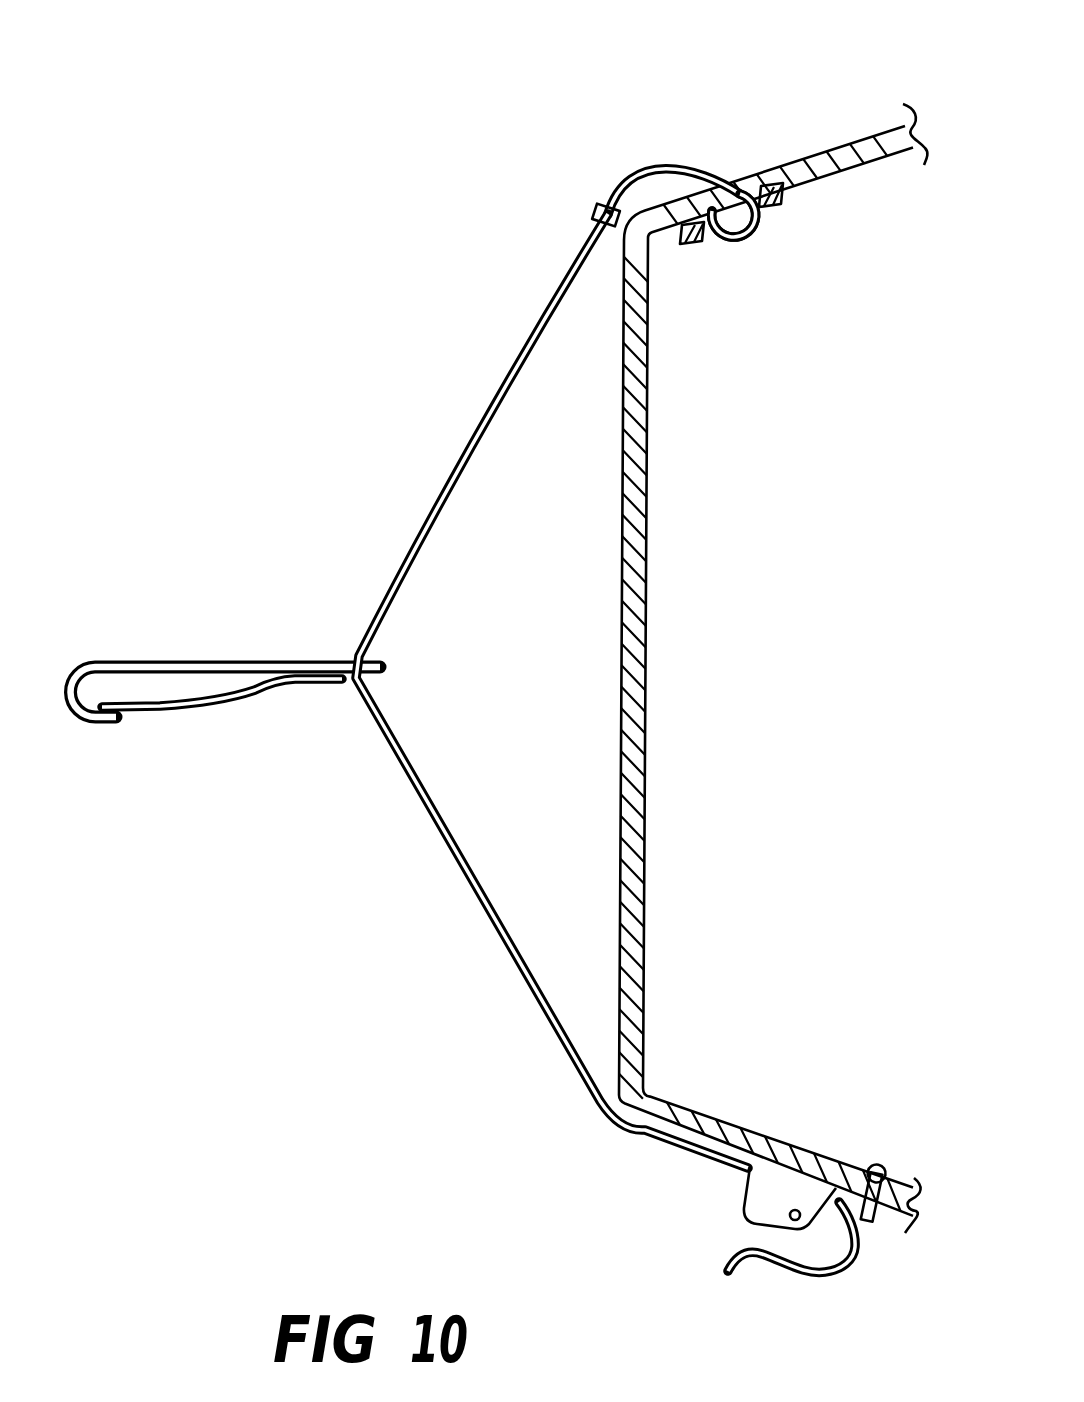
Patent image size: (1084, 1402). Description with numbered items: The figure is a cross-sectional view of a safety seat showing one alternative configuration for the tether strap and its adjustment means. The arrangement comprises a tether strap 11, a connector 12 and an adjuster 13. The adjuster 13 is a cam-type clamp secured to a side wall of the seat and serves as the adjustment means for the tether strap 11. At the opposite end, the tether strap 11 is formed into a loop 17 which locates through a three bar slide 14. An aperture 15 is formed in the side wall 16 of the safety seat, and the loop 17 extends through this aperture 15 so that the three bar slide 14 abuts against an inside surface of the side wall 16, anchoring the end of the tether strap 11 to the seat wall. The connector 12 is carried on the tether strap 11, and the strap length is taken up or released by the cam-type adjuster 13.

The tether strap 11 is at (508, 368).
The connector 12 is at (158, 660).
The adjuster 13 is at (743, 1199).
The three bar slide 14 is at (697, 237).
The aperture 15 is at (749, 155).
The side wall 16 is at (870, 157).
The loop 17 is at (752, 242).